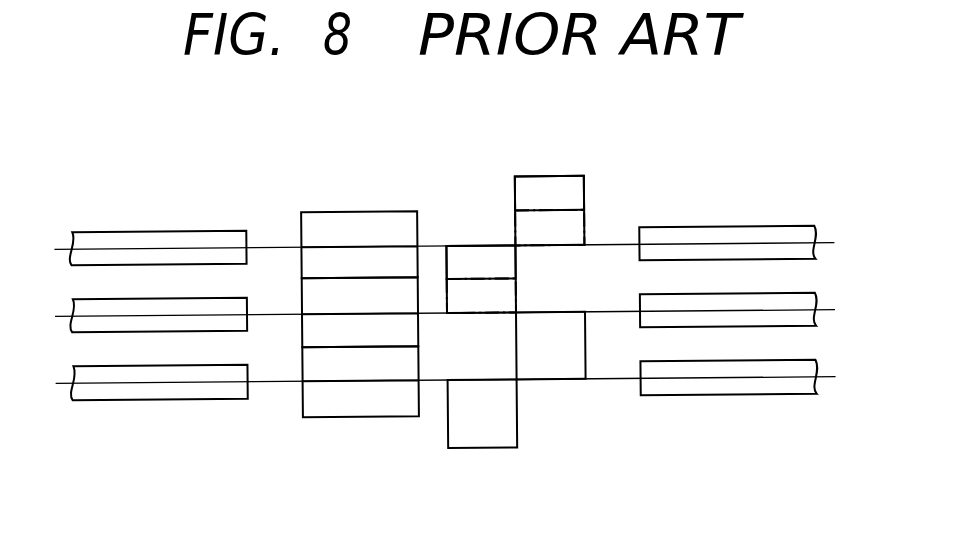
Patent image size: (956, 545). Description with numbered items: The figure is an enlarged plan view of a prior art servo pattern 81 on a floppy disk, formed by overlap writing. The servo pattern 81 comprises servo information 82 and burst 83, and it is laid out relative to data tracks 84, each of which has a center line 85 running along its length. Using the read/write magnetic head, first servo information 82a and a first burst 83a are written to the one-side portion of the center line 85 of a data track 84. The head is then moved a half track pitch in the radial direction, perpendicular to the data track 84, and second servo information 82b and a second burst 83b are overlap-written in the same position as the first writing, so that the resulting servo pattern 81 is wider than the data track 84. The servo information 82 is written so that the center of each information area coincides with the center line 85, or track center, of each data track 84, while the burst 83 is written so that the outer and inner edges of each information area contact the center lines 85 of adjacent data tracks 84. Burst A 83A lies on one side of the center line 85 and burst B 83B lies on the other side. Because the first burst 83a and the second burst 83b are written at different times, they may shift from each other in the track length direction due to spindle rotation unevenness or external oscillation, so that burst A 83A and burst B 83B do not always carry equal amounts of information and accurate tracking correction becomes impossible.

The servo pattern 81 is at (298, 147).
The servo information 82 is at (336, 289).
The first servo information 82a is at (303, 237).
The second servo information 82b is at (304, 248).
The burst 83 is at (579, 300).
The burst A 83A is at (658, 160).
The burst B 83B is at (589, 255).
The first burst 83a is at (577, 202).
The second burst 83b is at (577, 232).
The data track 84 is at (223, 228).
The center line 85 is at (829, 242).